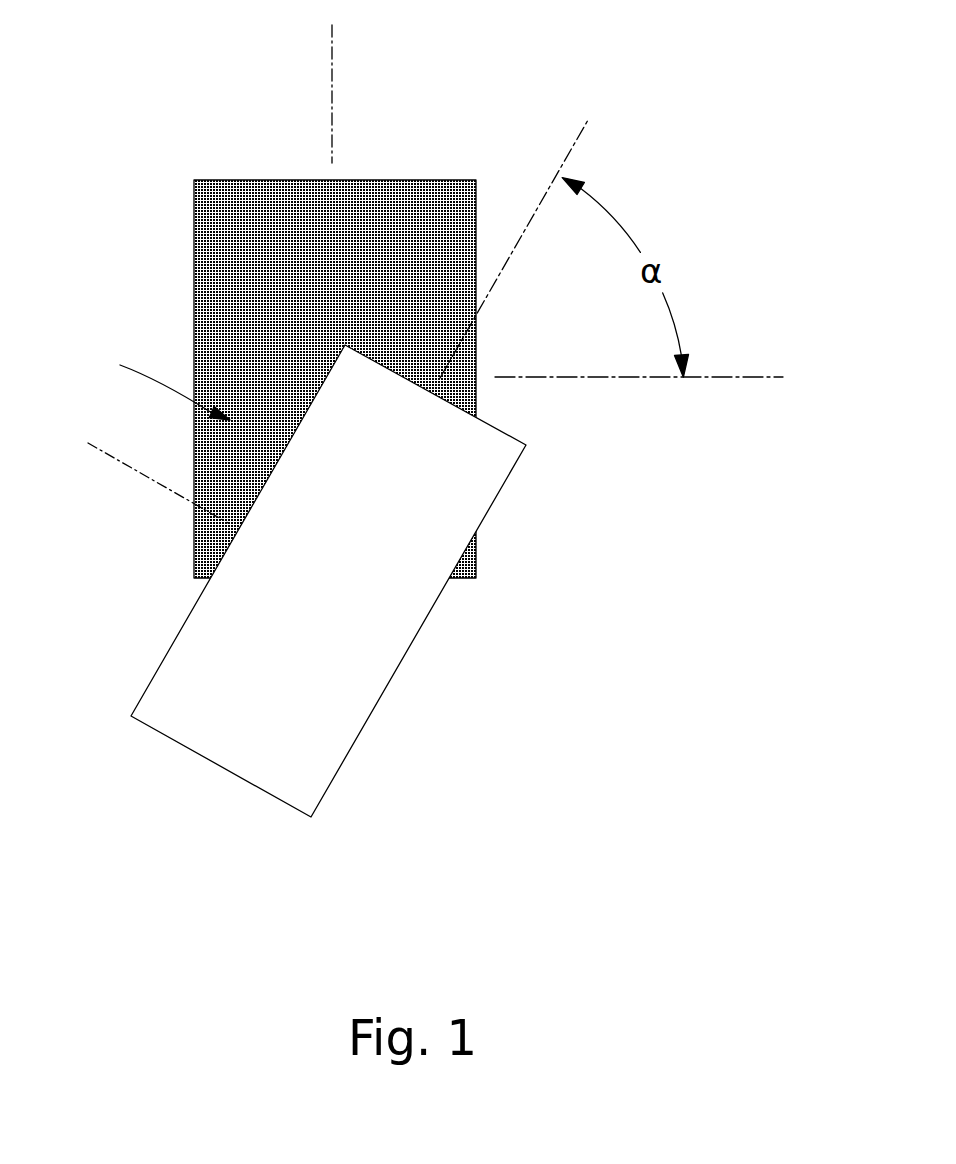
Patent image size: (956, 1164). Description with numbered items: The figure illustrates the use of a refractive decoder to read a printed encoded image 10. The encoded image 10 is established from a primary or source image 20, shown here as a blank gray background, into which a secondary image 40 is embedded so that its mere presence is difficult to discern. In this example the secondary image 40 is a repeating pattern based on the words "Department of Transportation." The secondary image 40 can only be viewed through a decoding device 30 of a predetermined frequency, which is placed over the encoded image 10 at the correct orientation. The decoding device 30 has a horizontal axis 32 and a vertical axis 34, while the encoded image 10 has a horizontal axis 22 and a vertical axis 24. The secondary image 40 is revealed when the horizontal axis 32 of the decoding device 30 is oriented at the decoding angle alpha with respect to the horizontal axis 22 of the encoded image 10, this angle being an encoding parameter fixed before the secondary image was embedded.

The encoded image 10 is at (193, 248).
The primary image 20 is at (168, 377).
The horizontal axis of the encoded image 22 is at (743, 378).
The vertical axis of the encoded image 24 is at (332, 77).
The decoding device 30 is at (357, 745).
The horizontal axis of the decoding device 32 is at (583, 128).
The vertical axis of the decoding device 34 is at (128, 468).
The secondary image 40 is at (453, 508).